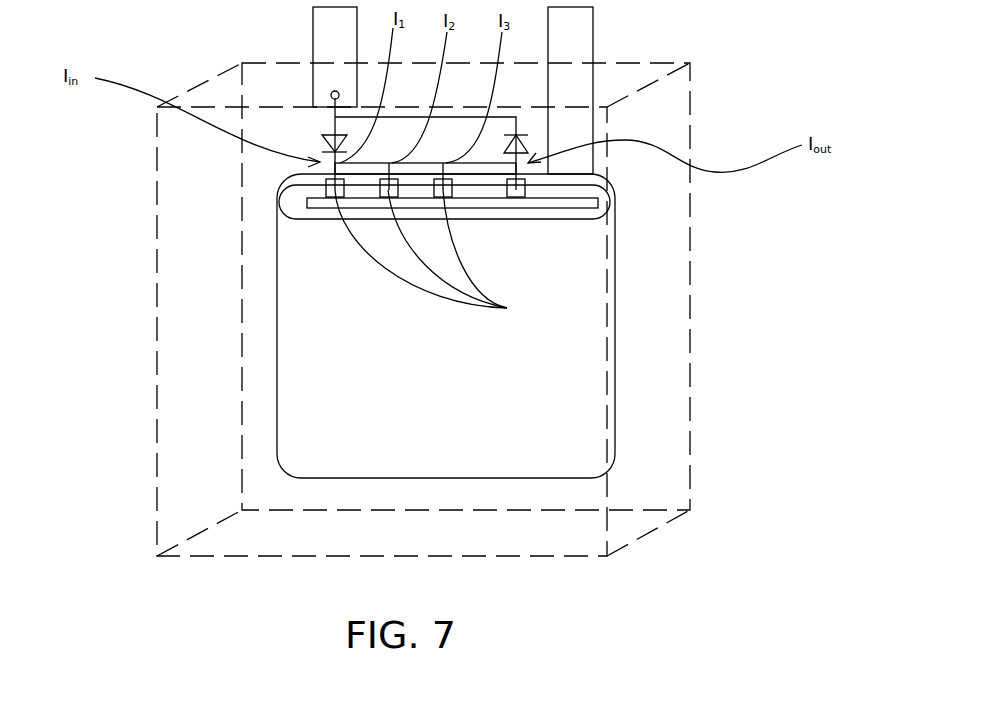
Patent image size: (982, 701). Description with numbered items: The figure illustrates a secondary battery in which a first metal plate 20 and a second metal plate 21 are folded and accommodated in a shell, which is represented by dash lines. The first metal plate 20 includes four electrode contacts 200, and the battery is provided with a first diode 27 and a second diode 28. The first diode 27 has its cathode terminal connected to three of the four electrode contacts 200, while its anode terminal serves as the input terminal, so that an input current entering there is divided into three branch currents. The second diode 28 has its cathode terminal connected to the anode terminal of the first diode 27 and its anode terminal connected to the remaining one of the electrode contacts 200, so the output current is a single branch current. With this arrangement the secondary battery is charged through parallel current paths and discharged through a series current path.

The first metal plate 20 is at (297, 177).
The second metal plate 21 is at (313, 220).
The first diode 27 is at (323, 143).
The second diode 28 is at (522, 145).
The electrode contacts 200 is at (525, 183).